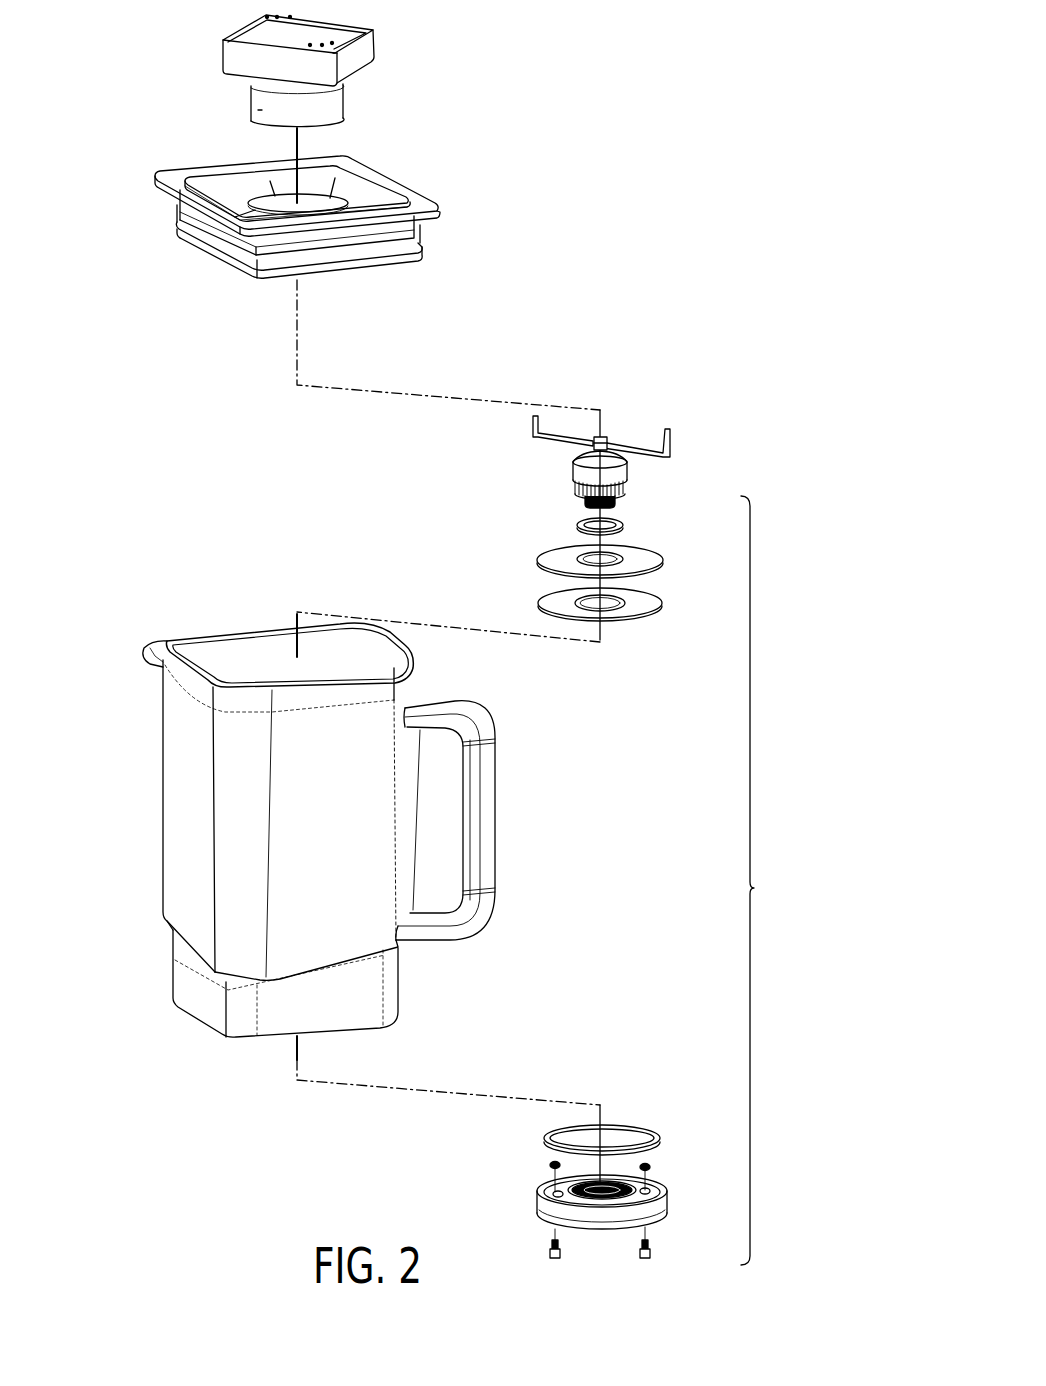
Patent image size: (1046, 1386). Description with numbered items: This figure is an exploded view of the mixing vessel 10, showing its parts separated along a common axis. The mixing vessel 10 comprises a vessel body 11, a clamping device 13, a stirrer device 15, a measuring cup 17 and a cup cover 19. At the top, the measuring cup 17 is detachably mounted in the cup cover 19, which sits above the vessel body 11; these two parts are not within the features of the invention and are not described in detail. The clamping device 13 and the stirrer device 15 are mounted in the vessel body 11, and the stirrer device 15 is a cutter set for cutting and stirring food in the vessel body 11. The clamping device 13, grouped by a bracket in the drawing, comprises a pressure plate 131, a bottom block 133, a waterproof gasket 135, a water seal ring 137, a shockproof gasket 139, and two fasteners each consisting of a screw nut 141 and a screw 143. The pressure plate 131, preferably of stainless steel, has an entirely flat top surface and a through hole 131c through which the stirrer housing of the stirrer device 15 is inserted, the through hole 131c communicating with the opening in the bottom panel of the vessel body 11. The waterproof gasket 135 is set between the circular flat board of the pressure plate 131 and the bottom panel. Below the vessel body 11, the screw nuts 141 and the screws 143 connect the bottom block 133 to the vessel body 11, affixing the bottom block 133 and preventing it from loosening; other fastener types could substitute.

The mixing vessel 10 is at (674, 128).
The vessel body 11 is at (497, 807).
The clamping device 13 is at (763, 880).
The stirrer device 15 is at (568, 472).
The measuring cup 17 is at (373, 43).
The cup cover 19 is at (400, 181).
The pressure plate 131 is at (573, 559).
The through hole 131c is at (578, 558).
The bottom block 133 is at (666, 1202).
The waterproof gasket 135 is at (655, 607).
The water seal ring 137 is at (623, 524).
The shockproof gasket 139 is at (653, 1130).
The screw nut 141 is at (548, 1165).
The screw 143 is at (550, 1243).